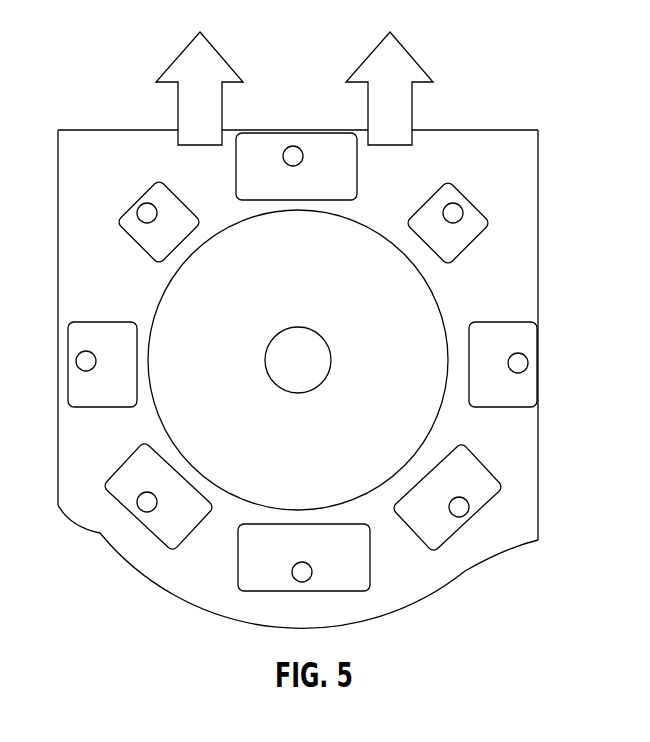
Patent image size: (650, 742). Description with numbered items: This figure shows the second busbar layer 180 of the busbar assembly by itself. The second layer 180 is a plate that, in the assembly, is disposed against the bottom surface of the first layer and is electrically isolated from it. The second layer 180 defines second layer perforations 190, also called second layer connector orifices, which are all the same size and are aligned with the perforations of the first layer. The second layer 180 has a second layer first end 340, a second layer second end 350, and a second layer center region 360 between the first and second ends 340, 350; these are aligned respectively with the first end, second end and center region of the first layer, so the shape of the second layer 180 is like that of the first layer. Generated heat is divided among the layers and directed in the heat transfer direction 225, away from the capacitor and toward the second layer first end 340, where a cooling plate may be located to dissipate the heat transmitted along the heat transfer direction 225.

The second busbar layer 180 is at (538, 211).
The second layer perforations 190 is at (528, 363).
The heat transfer direction 225 is at (418, 55).
The second layer first end 340 is at (462, 130).
The second layer second end 350 is at (422, 597).
The second layer center region 360 is at (505, 430).